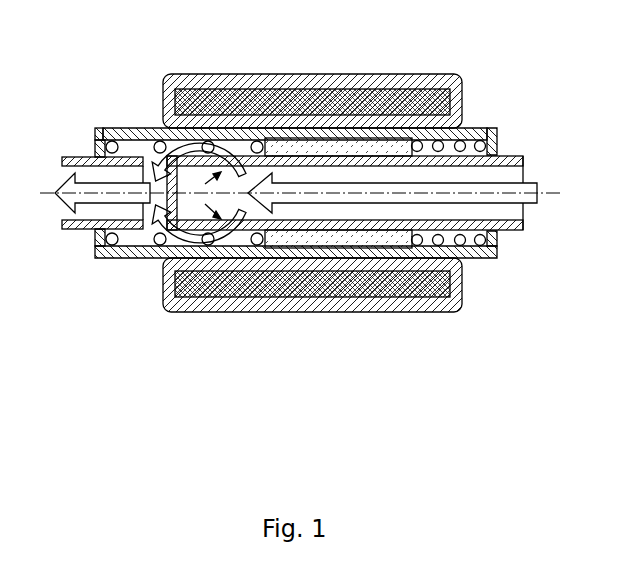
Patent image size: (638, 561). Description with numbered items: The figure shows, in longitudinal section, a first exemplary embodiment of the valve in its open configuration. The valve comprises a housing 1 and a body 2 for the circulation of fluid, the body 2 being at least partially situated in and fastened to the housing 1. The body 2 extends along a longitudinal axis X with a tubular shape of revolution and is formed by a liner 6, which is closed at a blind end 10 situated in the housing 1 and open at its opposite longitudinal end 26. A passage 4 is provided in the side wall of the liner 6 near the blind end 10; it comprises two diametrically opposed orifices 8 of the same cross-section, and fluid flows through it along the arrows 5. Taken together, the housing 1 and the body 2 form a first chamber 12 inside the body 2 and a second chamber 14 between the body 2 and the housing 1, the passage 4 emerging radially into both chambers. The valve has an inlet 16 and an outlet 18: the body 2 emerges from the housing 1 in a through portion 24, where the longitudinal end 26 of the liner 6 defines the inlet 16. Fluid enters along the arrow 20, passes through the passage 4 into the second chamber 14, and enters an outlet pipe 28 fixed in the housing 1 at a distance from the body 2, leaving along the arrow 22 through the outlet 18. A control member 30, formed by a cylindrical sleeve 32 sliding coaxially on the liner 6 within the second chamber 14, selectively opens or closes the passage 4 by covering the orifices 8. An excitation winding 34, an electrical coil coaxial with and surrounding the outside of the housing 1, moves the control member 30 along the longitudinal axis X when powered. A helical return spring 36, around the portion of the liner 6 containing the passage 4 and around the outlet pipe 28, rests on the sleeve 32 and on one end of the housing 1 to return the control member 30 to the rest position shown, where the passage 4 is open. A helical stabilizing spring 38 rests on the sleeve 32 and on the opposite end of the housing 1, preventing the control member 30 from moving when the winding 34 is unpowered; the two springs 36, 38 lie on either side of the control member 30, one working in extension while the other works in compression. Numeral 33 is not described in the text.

The housing 1 is at (303, 104).
The body 2 is at (312, 297).
The passage 4 is at (177, 193).
The arrows 5 is at (158, 145).
The liner 6 is at (355, 156).
The orifices 8 is at (218, 210).
The blind end 10 is at (182, 172).
The first chamber 12 is at (356, 141).
The second chamber 14 is at (296, 193).
The inlet 16 is at (526, 162).
The outlet 18 is at (56, 205).
The arrow 20 is at (526, 227).
The arrow 22 is at (95, 207).
The through portion 24 is at (513, 242).
The longitudinal end 26 is at (530, 203).
The pipe 28 is at (71, 158).
The control member 30 is at (312, 81).
The sleeve 32 is at (420, 312).
The stator coil 33 is at (326, 297).
The excitation winding 34 is at (325, 89).
The return spring 36 is at (100, 258).
The stabilizing spring 38 is at (470, 128).
The longitudinal axis X is at (557, 193).